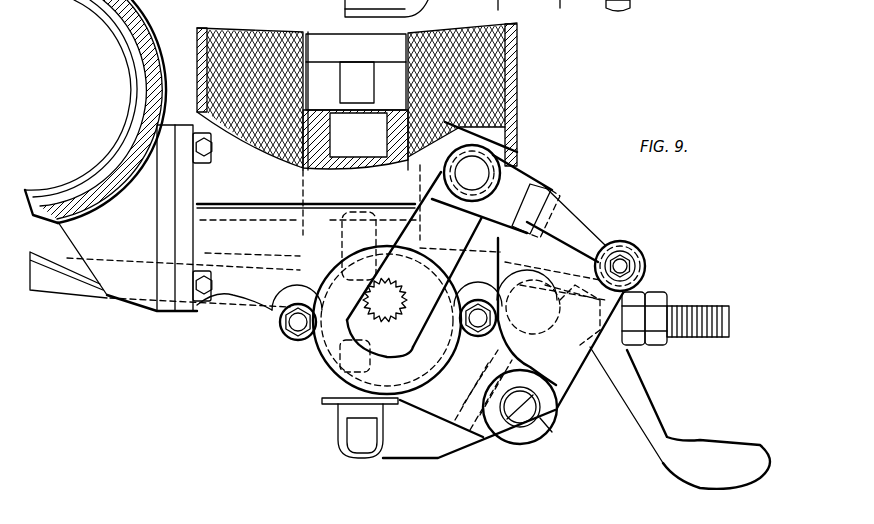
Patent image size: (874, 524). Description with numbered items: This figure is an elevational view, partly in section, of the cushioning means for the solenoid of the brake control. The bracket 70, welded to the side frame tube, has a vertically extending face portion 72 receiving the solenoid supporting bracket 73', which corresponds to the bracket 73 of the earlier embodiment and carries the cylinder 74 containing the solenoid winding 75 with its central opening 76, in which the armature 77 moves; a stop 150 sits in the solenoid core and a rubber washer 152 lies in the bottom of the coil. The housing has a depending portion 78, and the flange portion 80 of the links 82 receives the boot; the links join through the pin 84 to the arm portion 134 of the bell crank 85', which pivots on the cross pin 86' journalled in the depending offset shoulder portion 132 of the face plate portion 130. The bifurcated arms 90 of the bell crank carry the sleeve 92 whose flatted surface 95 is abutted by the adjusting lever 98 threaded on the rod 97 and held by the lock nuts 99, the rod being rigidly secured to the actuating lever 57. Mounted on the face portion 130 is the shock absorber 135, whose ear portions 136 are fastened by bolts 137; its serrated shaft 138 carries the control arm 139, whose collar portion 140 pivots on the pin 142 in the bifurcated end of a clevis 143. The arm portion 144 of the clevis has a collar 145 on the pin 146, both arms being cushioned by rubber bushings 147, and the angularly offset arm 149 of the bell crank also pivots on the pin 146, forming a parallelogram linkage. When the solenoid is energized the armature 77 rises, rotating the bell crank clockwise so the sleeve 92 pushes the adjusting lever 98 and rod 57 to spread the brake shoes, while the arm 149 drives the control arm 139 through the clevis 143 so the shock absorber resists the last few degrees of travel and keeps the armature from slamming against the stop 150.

The actuating lever 57 is at (66, 296).
The bracket 70 is at (122, 290).
The face portion 72 is at (168, 124).
The bracket 73 is at (152, 320).
The solenoid supporting bracket 73' is at (234, 317).
The cylinder 74 is at (197, 35).
The solenoid winding 75 is at (258, 30).
The central opening 76 is at (306, 98).
The armature 77 is at (390, 132).
The depending portion 78 is at (290, 247).
The flange portion 80 is at (325, 405).
The links 82 is at (343, 420).
The pin 84 is at (356, 452).
The bell crank 85' is at (520, 429).
The cross pin 86' is at (558, 434).
The bifurcated arms 90 is at (535, 278).
The sleeve 92 is at (522, 278).
The flatted surface 95 is at (562, 290).
The rod 97 is at (733, 325).
The adjusting lever 98 is at (658, 448).
The lock nuts 99 is at (648, 292).
The face plate portion 130 is at (504, 246).
The depending offset shoulder portion 132 is at (478, 420).
The arm portion 134 is at (405, 452).
The shock absorber 135 is at (320, 355).
The ear portions 136 is at (285, 330).
The bolts 137 is at (287, 342).
The shaft 138 is at (400, 322).
The control arm 139 is at (405, 215).
The collar portion 140 is at (502, 166).
The pin 142 is at (500, 181).
The clevis 143 is at (550, 8).
The arm portion 144 is at (570, 227).
The collar 145 is at (628, 242).
The pin 146 is at (640, 266).
The rubber bushings 147 is at (504, 8).
The angularly offset arm 149 is at (573, 380).
The stop 150 is at (388, 52).
The rubber washer 152 is at (318, 262).